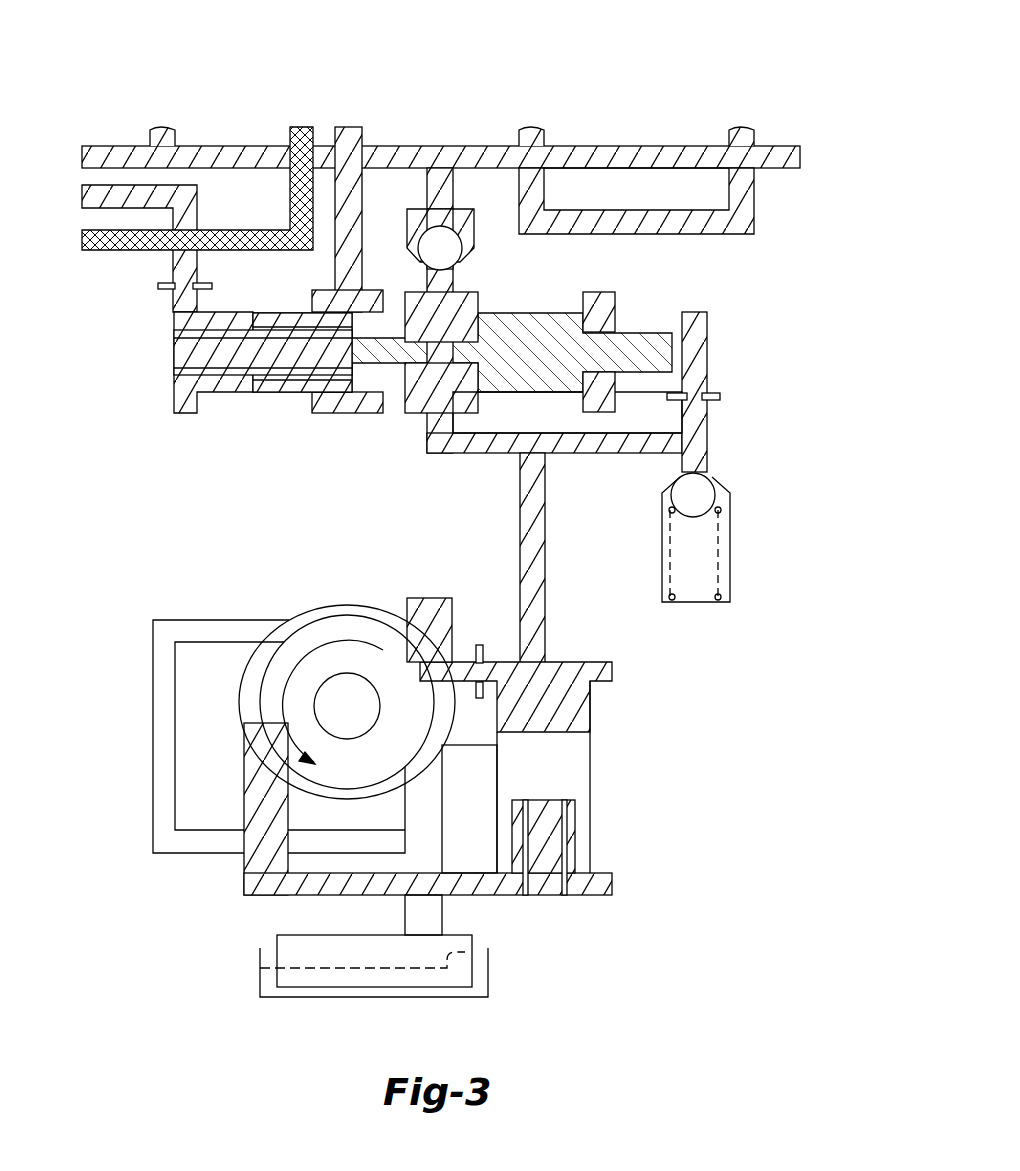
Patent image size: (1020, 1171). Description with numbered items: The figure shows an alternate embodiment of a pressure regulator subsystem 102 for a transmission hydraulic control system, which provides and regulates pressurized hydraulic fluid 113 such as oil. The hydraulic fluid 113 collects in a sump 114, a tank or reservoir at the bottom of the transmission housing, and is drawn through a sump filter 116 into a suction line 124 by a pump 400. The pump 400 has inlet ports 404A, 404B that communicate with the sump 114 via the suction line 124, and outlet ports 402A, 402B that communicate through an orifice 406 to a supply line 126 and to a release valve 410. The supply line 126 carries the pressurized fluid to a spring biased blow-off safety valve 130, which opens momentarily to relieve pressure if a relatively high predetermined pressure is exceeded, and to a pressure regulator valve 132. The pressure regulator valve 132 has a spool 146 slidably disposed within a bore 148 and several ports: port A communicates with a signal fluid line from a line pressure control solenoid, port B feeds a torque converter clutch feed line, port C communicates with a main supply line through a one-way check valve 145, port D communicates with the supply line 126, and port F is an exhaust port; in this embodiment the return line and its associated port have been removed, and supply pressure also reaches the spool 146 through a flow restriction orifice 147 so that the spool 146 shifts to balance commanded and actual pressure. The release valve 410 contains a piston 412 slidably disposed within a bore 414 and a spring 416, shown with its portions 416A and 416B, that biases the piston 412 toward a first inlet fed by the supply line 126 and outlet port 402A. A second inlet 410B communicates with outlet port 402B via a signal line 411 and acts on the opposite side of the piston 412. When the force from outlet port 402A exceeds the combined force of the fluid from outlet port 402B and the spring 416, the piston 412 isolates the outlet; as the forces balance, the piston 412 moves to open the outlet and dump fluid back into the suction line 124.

The pressure regulator subsystem 102 is at (742, 68).
The hydraulic fluid 113 is at (465, 952).
The sump 114 is at (260, 975).
The sump filter 116 is at (290, 935).
The suction line 124 is at (152, 817).
The supply line 126 is at (546, 500).
The spring biased blow-off safety valve 130 is at (732, 548).
The pressure regulator valve 132 is at (728, 341).
The one-way check valve 145 is at (473, 230).
The spool 146 is at (573, 310).
The flow restriction orifice 147 is at (722, 397).
The bore 148 is at (207, 370).
The pump 400 is at (335, 606).
The outlet port 402A is at (438, 632).
The outlet port 402B is at (247, 797).
The inlet port 404A is at (426, 775).
The inlet port 404B is at (250, 655).
The orifice 406 is at (481, 645).
The release valve 410 is at (582, 808).
The second inlet 410B is at (497, 873).
The signal line 411 is at (245, 868).
The piston 412 is at (567, 752).
The bore 414 is at (590, 850).
The spring 416 is at (545, 880).
The spring first end 416A is at (487, 686).
The spring second end 416B is at (490, 746).
The signal fluid port A is at (203, 310).
The TCC feed port B is at (335, 290).
The main supply port C is at (427, 290).
The supply line port D is at (425, 438).
The exhaust port F is at (613, 404).